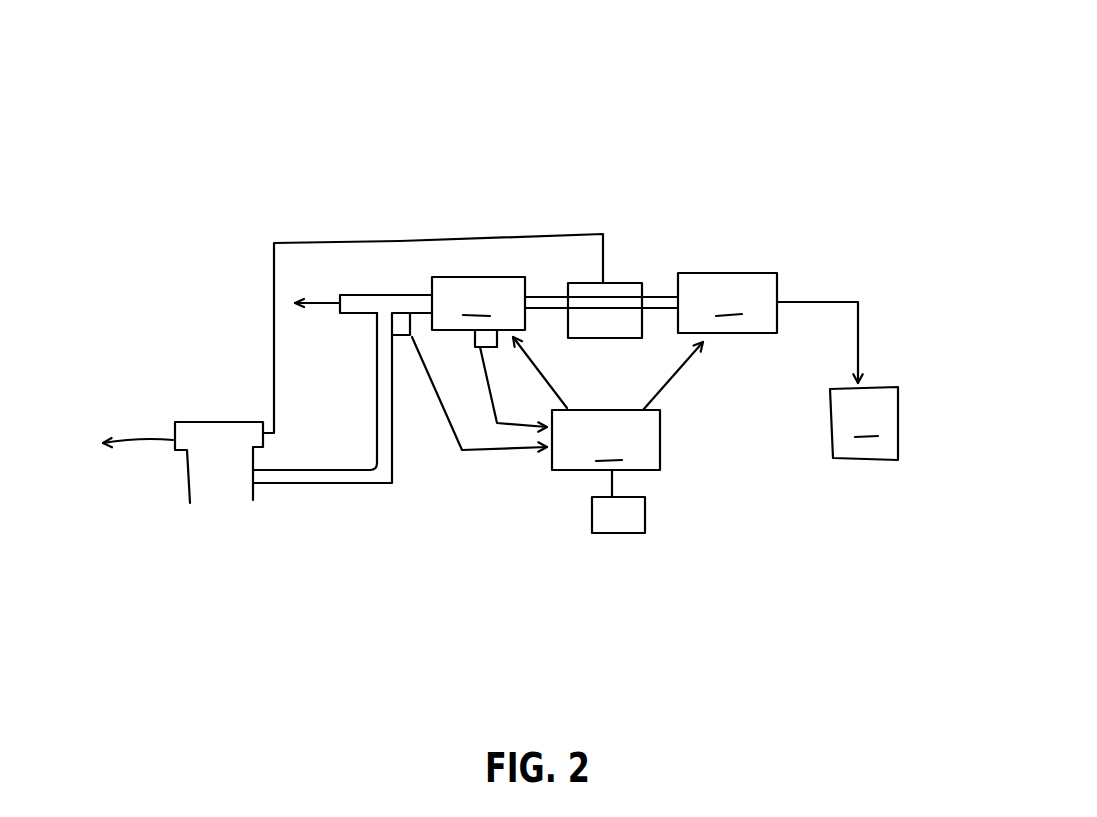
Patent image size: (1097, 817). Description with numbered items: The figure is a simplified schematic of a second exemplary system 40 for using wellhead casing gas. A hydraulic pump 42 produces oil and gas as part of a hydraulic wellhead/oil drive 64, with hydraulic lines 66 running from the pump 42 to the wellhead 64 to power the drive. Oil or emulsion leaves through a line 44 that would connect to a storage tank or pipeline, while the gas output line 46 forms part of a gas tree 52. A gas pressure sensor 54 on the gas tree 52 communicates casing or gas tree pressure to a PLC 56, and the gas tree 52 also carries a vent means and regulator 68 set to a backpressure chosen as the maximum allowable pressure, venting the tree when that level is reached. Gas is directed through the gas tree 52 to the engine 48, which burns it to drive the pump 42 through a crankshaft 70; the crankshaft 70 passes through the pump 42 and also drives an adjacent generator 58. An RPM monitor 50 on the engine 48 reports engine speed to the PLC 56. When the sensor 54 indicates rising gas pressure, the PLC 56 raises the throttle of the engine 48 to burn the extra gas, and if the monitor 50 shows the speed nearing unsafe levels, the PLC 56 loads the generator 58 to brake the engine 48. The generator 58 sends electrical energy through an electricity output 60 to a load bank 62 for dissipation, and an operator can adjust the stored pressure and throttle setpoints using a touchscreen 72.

The second exemplary system 40 is at (881, 86).
The hydraulic pump 42 is at (618, 283).
The line 44 is at (142, 432).
The gas output line 46 is at (320, 483).
The engine 48 is at (478, 303).
The RPM monitor 50 is at (473, 337).
The gas tree 52 is at (355, 287).
The gas pressure sensor 54 is at (395, 310).
The PLC 56 is at (557, 403).
The generator 58 is at (727, 303).
The electricity output 60 is at (840, 293).
The load bank 62 is at (864, 423).
The hydraulic wellhead/oil drive 64 is at (221, 412).
The hydraulic lines 66 is at (272, 308).
The vent means and regulator 68 is at (320, 310).
The crankshaft 70 is at (552, 313).
The touchscreen 72 is at (627, 518).